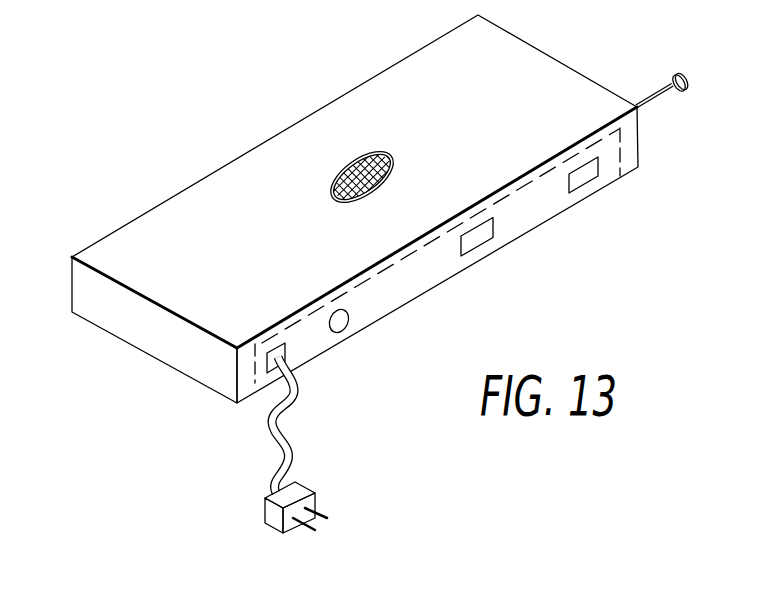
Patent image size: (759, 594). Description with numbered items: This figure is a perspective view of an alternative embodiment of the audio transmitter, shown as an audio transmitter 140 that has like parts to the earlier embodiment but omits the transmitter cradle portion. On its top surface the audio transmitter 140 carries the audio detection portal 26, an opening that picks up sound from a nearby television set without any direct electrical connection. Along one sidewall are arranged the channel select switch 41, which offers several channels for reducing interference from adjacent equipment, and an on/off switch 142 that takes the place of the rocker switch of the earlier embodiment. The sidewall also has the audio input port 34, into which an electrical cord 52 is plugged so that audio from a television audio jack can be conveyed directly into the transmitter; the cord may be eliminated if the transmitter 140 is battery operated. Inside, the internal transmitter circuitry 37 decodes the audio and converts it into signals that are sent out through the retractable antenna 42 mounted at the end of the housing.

The audio transmitter 140 is at (349, 209).
The audio detection portal 26 is at (345, 165).
The retractable audio transmitter antenna 42 is at (658, 87).
The internal transmitter circuitry 37 is at (620, 137).
The on/off switch 142 is at (583, 187).
The channel select switch 41 is at (475, 250).
The audio input port 34 is at (345, 329).
The electrical cord 52 is at (287, 442).